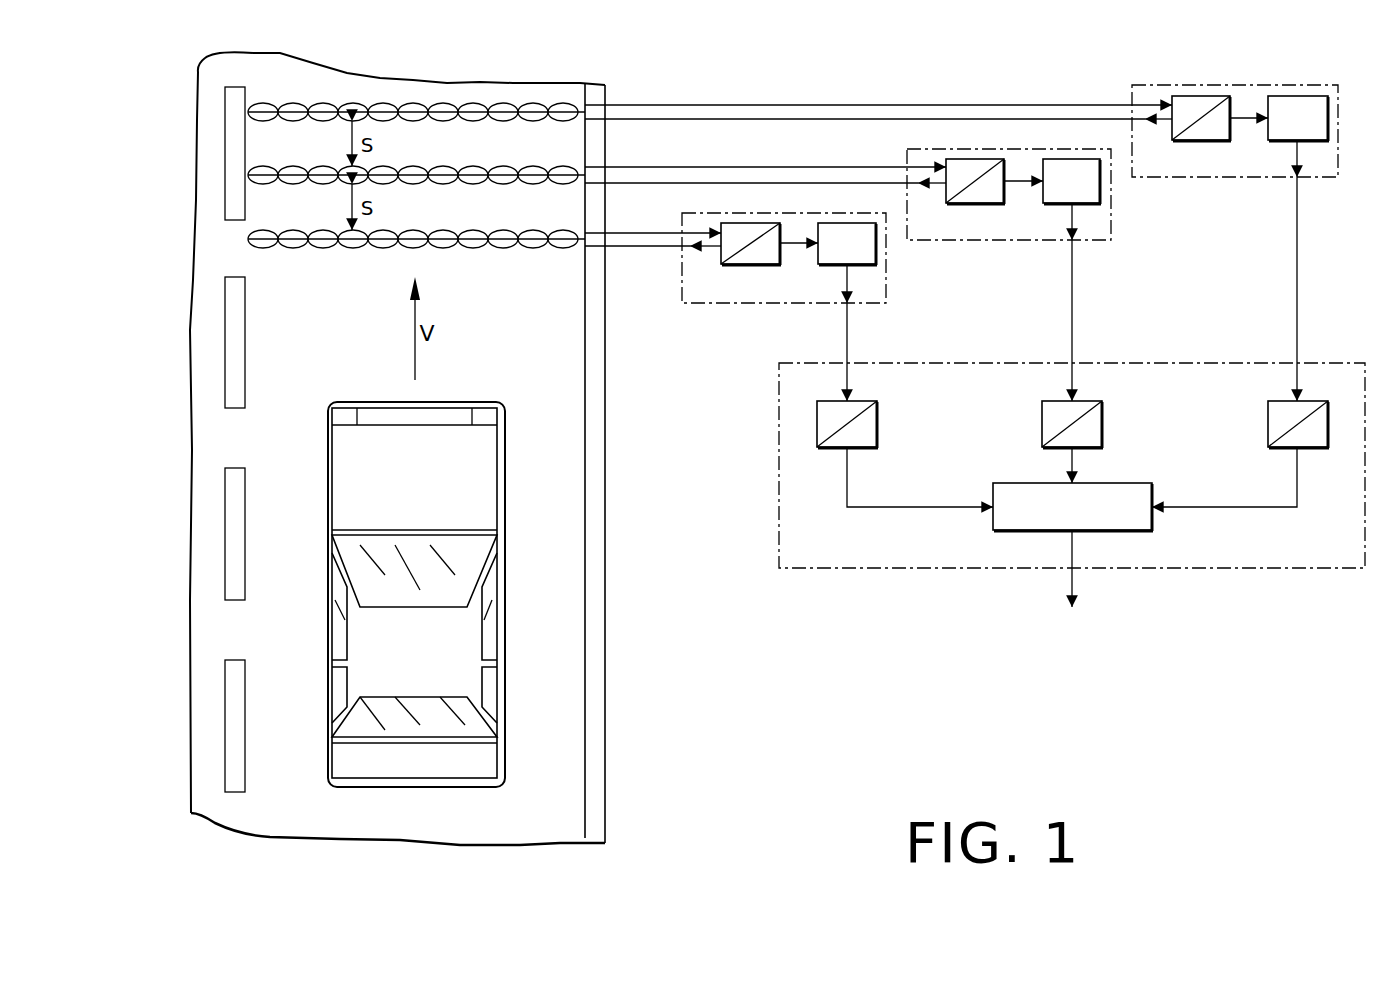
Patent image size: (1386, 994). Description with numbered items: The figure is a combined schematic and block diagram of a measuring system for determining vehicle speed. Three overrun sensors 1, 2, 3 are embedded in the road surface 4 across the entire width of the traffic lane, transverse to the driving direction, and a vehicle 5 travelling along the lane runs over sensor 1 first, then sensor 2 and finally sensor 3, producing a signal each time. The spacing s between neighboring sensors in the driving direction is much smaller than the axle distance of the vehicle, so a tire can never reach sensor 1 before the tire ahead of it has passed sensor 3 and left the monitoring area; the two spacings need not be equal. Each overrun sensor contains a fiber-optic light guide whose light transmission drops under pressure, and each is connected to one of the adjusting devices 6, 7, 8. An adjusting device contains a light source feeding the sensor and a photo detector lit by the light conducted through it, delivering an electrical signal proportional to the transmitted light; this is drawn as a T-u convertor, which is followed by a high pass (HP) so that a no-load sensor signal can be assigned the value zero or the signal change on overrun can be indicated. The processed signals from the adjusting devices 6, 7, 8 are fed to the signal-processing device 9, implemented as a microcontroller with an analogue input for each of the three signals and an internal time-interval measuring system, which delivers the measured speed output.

The overrun sensor 1 is at (260, 236).
The overrun sensor 2 is at (262, 171).
The overrun sensor 3 is at (262, 107).
The road surface 4 is at (207, 331).
The vehicle 5 is at (407, 659).
The adjusting device 6 is at (867, 303).
The adjusting device 7 is at (1097, 240).
The adjusting device 8 is at (1318, 177).
The signal-processing device 9 is at (832, 568).